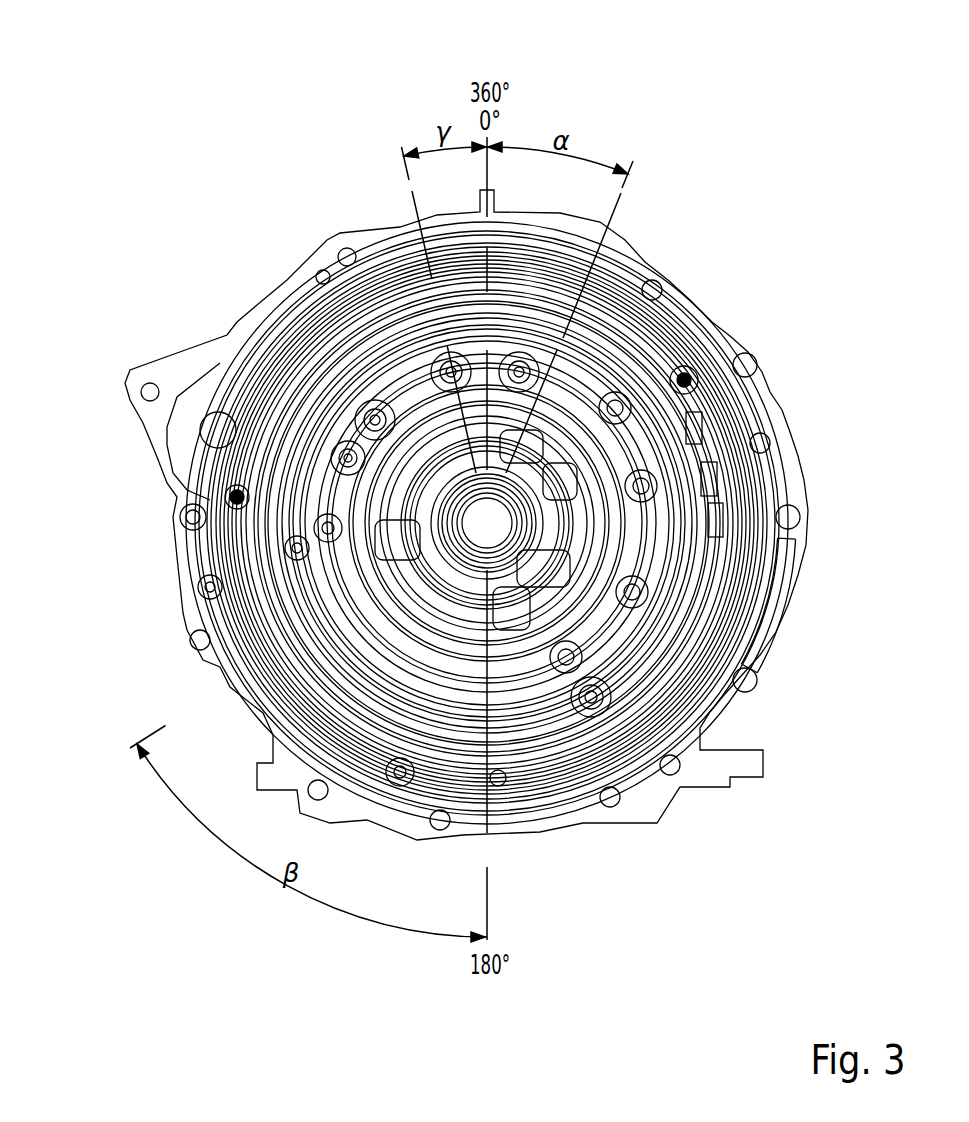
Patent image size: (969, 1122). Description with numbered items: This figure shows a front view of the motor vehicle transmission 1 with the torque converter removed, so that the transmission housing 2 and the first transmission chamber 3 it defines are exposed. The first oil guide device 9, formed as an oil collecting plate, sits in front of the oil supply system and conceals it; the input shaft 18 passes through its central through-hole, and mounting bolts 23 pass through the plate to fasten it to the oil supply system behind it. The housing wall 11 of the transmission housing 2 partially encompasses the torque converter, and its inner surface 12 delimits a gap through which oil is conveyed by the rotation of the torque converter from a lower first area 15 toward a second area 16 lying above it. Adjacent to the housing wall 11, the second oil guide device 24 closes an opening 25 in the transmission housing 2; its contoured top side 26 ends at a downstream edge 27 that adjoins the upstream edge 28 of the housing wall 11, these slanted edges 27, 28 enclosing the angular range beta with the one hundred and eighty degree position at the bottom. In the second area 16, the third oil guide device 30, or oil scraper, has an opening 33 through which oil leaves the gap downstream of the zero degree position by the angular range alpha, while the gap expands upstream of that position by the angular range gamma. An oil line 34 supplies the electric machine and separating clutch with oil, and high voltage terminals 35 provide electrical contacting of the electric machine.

The motor vehicle transmission 1 is at (286, 125).
The transmission housing 2 is at (282, 280).
The first transmission chamber 3 is at (685, 664).
The first oil guide device 9 is at (625, 545).
The housing wall 11 is at (290, 366).
The inner surface 12 is at (289, 404).
The first area 15 is at (498, 778).
The second area 16 is at (633, 282).
The input shaft 18 is at (497, 530).
The mounting bolts 23 is at (376, 418).
The second oil guide device 24 is at (455, 737).
The opening 25 is at (400, 772).
The top side 26 is at (487, 523).
The downstream edge 27 is at (338, 613).
The upstream edge 28 is at (487, 523).
The third oil guide device 30 is at (655, 318).
The opening 33 is at (548, 258).
The oil line 34 is at (238, 497).
The high voltage terminals 35 is at (703, 427).